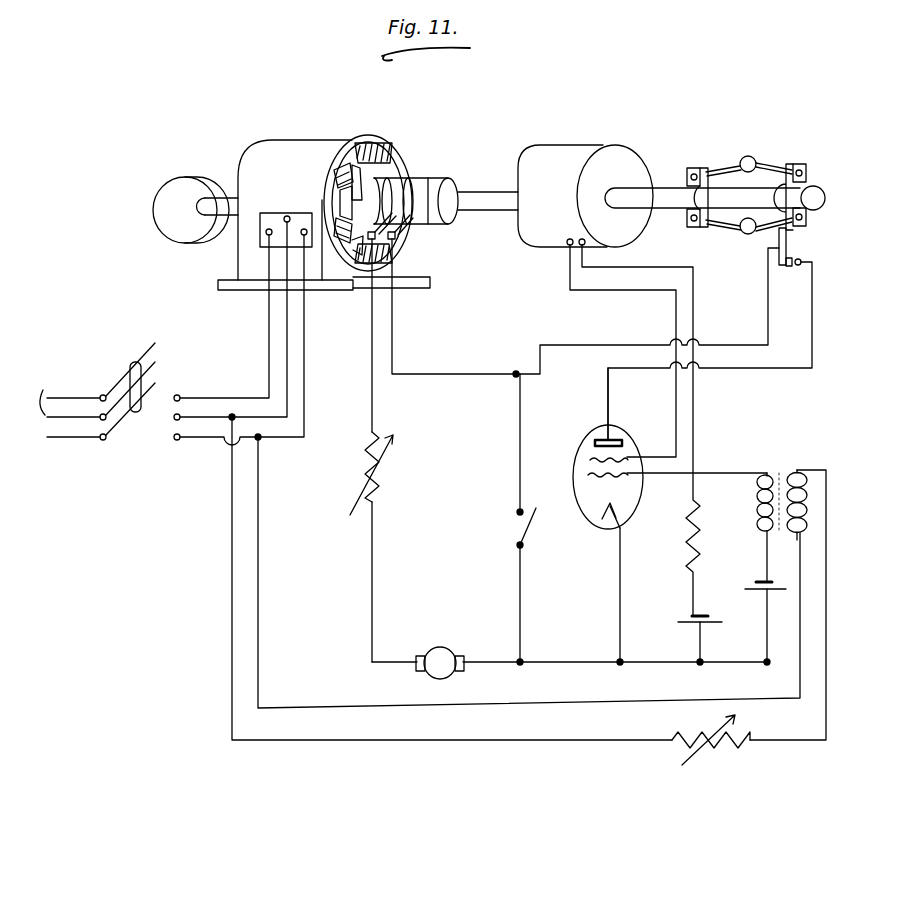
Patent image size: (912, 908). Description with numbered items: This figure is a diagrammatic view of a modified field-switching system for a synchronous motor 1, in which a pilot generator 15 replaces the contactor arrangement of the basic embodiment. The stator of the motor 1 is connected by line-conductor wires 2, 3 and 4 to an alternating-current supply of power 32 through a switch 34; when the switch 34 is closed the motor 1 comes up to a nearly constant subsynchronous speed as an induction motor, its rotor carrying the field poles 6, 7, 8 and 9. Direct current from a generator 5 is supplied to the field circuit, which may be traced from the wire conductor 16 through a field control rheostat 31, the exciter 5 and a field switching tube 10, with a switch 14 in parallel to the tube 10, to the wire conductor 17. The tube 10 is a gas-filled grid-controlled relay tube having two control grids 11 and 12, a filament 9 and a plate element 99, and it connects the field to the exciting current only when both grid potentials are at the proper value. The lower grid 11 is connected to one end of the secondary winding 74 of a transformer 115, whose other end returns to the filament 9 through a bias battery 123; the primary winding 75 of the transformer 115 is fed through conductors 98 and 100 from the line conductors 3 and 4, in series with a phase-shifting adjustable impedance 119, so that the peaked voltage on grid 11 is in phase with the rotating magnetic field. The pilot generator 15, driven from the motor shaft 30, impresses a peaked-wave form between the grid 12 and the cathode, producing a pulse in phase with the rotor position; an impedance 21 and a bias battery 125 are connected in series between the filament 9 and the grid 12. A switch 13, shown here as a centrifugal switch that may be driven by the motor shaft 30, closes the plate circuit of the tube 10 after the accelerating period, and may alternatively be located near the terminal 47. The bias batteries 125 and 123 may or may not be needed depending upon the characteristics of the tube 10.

The synchronous motor 1 is at (277, 148).
The line-conductor wire 2 is at (198, 397).
The line-conductor wire 3 is at (214, 417).
The line-conductor wire 4 is at (198, 437).
The generator 5 is at (440, 655).
The field pole 6 is at (393, 165).
The field pole 7 is at (398, 240).
The field pole 8 is at (357, 238).
The field pole / filament 9 is at (353, 167).
The field switching tube 10 is at (629, 420).
The control grid 11 is at (635, 482).
The control grid 12 is at (623, 460).
The switch 13 is at (784, 253).
The switch 14 is at (517, 523).
The pilot generator 15 is at (562, 160).
The wire conductor 16 is at (370, 353).
The wire conductor 17 is at (393, 333).
The impedance 21 is at (692, 538).
The motor shaft 30 is at (468, 200).
The field control rheostat 31 is at (378, 480).
The alternating-current supply of power 32 is at (97, 391).
The switch 34 is at (130, 362).
The terminal 47 is at (513, 368).
The secondary winding 74 is at (760, 482).
The primary winding 75 is at (797, 476).
The conductor 98 is at (490, 702).
The anode plate 99 is at (625, 440).
The conductor 100 is at (529, 603).
The transformer 115 is at (778, 468).
The adjustable impedance 119 is at (717, 750).
The bias battery 123 is at (753, 582).
The bias battery 125 is at (688, 617).